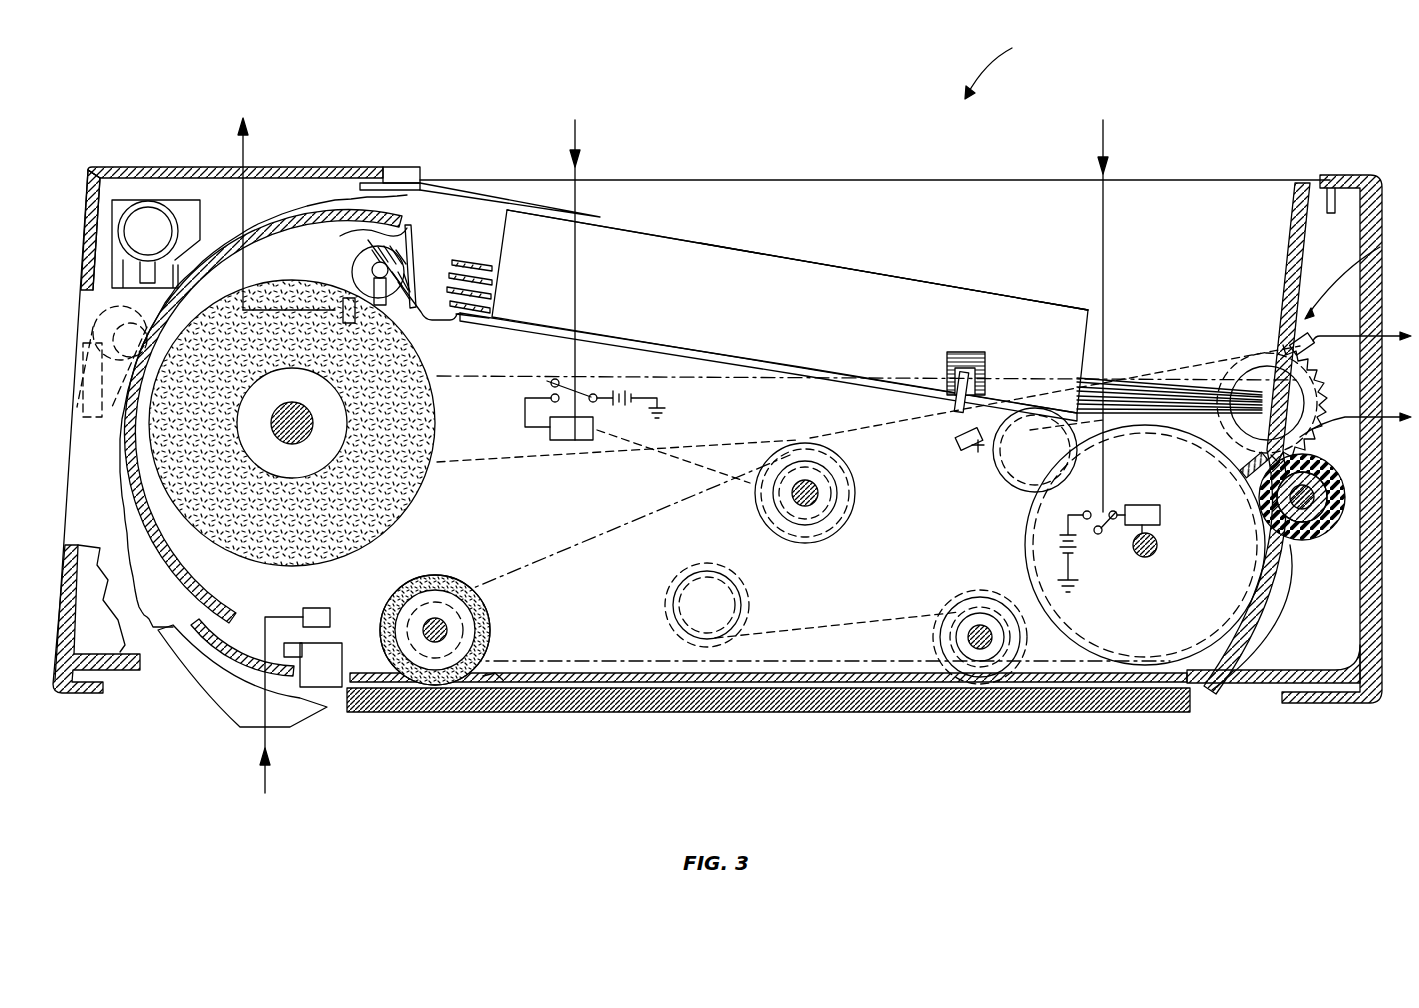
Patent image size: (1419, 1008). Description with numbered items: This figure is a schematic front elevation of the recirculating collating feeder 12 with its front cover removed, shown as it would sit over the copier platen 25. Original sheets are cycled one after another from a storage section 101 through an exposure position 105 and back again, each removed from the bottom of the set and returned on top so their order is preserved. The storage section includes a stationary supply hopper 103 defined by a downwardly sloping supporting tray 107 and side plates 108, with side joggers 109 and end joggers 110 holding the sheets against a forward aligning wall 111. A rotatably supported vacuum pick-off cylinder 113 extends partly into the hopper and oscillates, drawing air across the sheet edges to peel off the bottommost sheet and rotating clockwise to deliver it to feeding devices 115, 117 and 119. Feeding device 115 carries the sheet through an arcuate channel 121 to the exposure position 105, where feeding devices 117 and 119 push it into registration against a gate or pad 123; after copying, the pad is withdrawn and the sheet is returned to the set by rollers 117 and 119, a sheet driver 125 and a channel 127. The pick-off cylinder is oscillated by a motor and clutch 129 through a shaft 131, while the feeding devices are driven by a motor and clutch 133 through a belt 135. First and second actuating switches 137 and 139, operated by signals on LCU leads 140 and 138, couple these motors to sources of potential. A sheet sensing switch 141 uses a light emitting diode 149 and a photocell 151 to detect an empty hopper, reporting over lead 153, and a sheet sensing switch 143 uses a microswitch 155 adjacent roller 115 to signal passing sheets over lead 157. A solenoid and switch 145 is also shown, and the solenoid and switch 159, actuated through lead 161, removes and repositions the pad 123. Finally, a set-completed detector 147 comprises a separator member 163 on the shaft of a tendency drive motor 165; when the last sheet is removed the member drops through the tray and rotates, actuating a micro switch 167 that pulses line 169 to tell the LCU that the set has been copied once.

The feeder 12 is at (1011, 62).
The platen 25 is at (886, 712).
The storage section 101 is at (676, 205).
The supply hopper 103 is at (830, 266).
The exposure position 105 is at (630, 707).
The supporting tray 107 is at (540, 333).
The side plates 108 is at (743, 268).
The side joggers 109 is at (965, 378).
The end joggers 110 is at (370, 231).
The forward aligning wall 111 is at (1288, 305).
The vacuum pick-off cylinder 113 is at (1032, 538).
The feeding device 115 is at (1310, 533).
The feeding device 117 is at (957, 605).
The feeding device 119 is at (490, 620).
The arcuate channel 121 is at (1255, 637).
The gate or pad 123 is at (327, 680).
The sheet driver 125 is at (414, 497).
The channel 127 is at (120, 483).
The motor and clutch 129 is at (1160, 518).
The shaft 131 is at (1156, 549).
The motor and clutch 133 is at (582, 440).
The belt 135 is at (588, 544).
The first actuating switch 137 is at (520, 385).
The LCU lead 138 is at (580, 137).
The second actuating switch 139 is at (1103, 562).
The LCU lead 140 is at (1110, 140).
The sheet sensing switch 141 is at (1362, 273).
The sheet sensing switch 143 is at (1220, 478).
The solenoid and switch 145 is at (358, 602).
The set-completed detector 147 is at (425, 251).
The light emitting diode 149 is at (955, 443).
The photocell 151 is at (1315, 350).
The lead 153 is at (1388, 332).
The microswitch 155 is at (1243, 478).
The lead 157 is at (1392, 412).
The solenoid and switch 159 is at (310, 610).
The lead 161 is at (268, 772).
The separator member 163 is at (438, 277).
The tendency drive motor 165 is at (354, 266).
The micro switch 167 is at (407, 320).
The line 169 is at (250, 130).